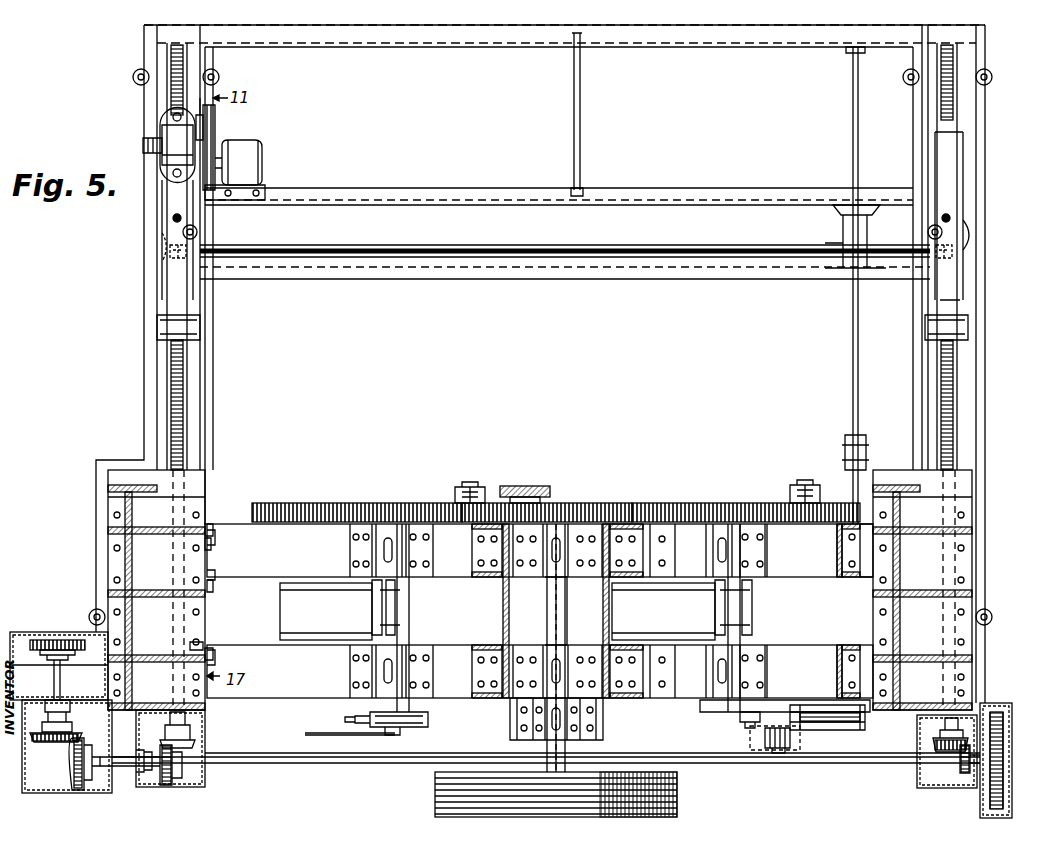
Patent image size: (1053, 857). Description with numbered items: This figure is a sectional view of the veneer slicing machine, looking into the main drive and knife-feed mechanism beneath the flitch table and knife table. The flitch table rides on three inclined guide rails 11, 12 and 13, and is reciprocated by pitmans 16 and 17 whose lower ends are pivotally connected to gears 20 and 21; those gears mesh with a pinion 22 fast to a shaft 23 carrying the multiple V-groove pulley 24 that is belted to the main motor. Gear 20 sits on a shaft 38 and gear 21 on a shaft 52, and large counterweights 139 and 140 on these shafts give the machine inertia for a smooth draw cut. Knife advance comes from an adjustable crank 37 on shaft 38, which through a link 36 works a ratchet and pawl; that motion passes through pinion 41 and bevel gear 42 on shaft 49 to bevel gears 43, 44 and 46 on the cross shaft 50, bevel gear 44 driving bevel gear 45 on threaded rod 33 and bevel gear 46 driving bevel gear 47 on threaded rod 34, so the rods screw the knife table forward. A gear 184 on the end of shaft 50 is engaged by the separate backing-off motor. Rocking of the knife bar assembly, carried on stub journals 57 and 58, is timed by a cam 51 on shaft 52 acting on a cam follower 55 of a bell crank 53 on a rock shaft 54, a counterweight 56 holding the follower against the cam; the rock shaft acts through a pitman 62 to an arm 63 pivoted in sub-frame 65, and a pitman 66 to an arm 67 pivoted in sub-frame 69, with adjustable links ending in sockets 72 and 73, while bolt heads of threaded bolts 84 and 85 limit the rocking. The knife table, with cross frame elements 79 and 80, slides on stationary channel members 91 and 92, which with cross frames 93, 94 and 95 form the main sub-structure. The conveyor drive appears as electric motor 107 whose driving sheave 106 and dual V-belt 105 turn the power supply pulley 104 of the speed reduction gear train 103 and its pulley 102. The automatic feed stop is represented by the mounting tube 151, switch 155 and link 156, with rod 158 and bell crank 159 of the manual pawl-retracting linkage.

The guide rail 11 is at (112, 482).
The guide rail 12 is at (532, 486).
The guide rail 13 is at (880, 482).
The pitman 16 is at (478, 486).
The pitman 17 is at (812, 485).
The gear 20 is at (345, 500).
The gear 21 is at (690, 503).
The pinion 22 is at (590, 503).
The shaft 23 is at (567, 618).
The multiple V-groove pulley 24 is at (677, 790).
The threaded rod 33 is at (170, 368).
The threaded rod 34 is at (955, 372).
The link 36 is at (345, 738).
The adjustable crank 37 is at (430, 720).
The shaft 38 is at (412, 635).
The pinion 41 is at (35, 625).
The bevel gear 42 is at (72, 736).
The bevel gear 43 is at (72, 770).
The bevel gear 44 is at (170, 790).
The bevel gear 45 is at (205, 742).
The bevel gear 46 is at (950, 790).
The bevel gear 47 is at (928, 742).
The shaft 49 is at (50, 676).
The shaft 50 is at (292, 770).
The cam 51 is at (695, 712).
The shaft 52 is at (742, 635).
The bell crank 53 is at (830, 732).
The rock shaft 54 is at (853, 376).
The cam follower 55 is at (762, 700).
The counterweight 56 is at (745, 740).
The stub journal 57 is at (198, 330).
The stub journal 58 is at (925, 328).
The pitman 62 is at (843, 240).
The arm 63 is at (954, 255).
The sub-frame 65 is at (968, 235).
The pitman 66 is at (508, 257).
The arm 67 is at (165, 263).
The sub-frame 69 is at (160, 240).
The socket 72 is at (198, 230).
The socket 73 is at (928, 232).
The cross frame element 79 is at (640, 188).
The cross frame element 80 is at (655, 279).
The threaded bolt 84 is at (172, 218).
The threaded bolt 85 is at (950, 216).
The channel member 91 is at (157, 432).
The channel member 92 is at (972, 425).
The cross frame 93 is at (344, 45).
The cross frame 94 is at (258, 582).
The cross frame 95 is at (283, 698).
The pulley 102 is at (143, 145).
The speed reduction gear train 103 is at (165, 160).
The power supply pulley 104 is at (216, 125).
The dual V-belt 105 is at (216, 148).
The driving sheave 106 is at (200, 188).
The electric motor 107 is at (262, 162).
The counterweight 139 is at (326, 611).
The counterweight 140 is at (663, 611).
The mounting tube 151 is at (220, 600).
The switch 155 is at (196, 642).
The link 156 is at (213, 658).
The rod 158 is at (211, 548).
The bell crank 159 is at (213, 538).
The gear 184 is at (1028, 716).